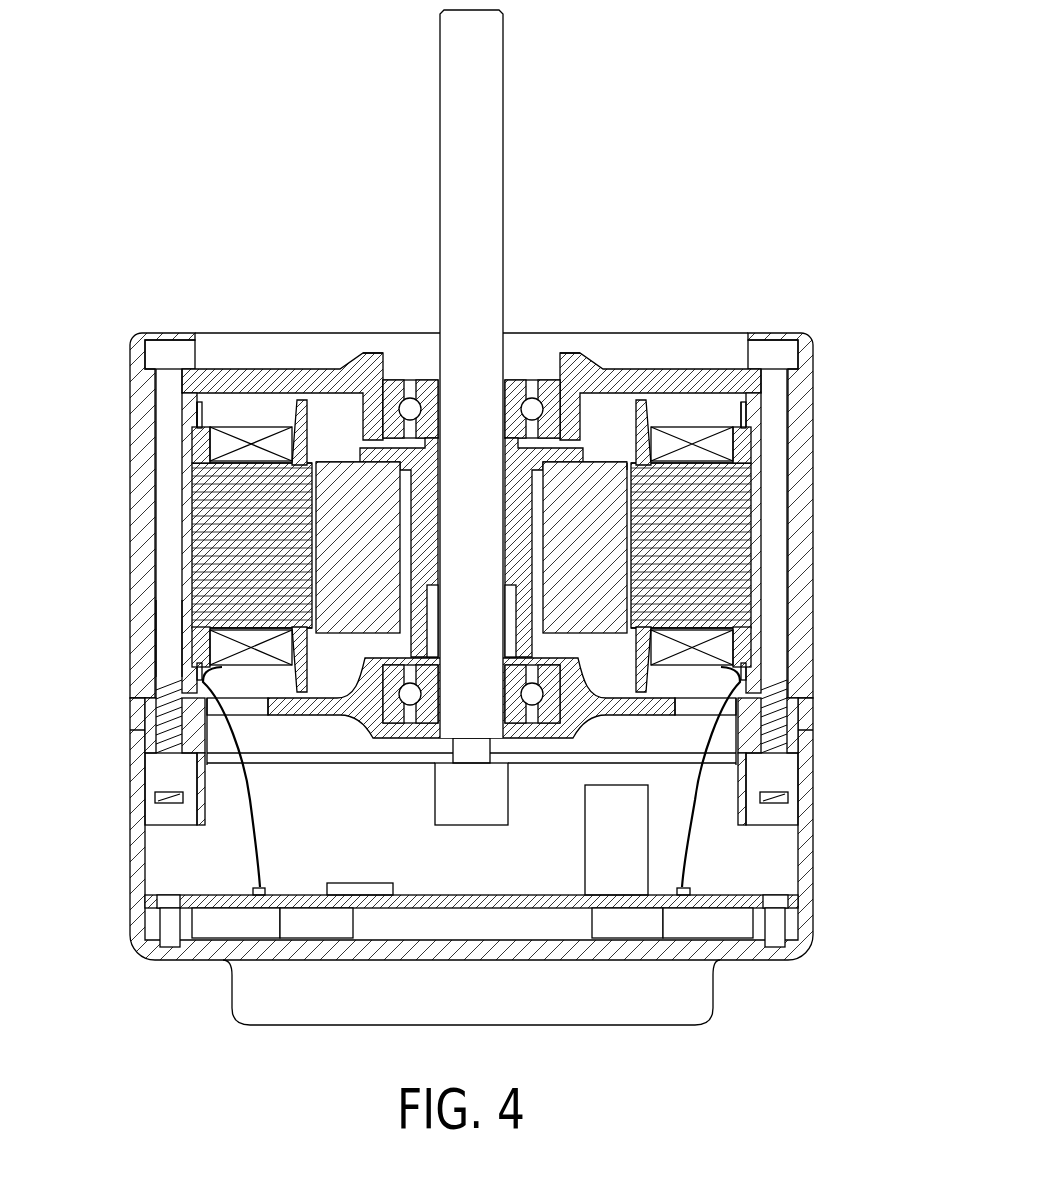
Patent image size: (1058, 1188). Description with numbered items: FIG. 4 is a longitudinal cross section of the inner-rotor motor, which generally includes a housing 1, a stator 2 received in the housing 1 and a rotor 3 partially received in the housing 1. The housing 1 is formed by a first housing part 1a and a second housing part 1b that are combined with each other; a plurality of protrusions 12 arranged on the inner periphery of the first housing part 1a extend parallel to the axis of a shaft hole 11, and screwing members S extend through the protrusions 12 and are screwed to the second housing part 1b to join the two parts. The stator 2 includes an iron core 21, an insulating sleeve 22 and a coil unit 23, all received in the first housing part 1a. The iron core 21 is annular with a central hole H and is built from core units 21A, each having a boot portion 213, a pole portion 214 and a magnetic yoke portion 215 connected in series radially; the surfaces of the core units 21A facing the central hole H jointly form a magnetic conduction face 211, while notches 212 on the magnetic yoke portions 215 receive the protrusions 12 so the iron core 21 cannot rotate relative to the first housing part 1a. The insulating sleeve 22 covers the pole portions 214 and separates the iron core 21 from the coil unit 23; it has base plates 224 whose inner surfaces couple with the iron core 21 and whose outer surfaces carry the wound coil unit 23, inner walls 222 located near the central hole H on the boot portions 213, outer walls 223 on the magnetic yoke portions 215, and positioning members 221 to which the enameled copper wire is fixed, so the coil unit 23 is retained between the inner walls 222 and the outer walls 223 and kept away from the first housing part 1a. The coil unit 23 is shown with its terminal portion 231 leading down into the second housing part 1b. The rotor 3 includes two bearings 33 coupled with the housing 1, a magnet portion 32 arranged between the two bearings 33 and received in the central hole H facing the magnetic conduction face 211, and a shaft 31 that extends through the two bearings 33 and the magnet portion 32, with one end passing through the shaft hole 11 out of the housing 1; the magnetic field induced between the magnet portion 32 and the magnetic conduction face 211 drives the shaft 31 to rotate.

The housing 1 is at (464, 684).
The first housing part 1a is at (803, 670).
The second housing part 1b is at (795, 947).
The shaft hole 11 is at (509, 350).
The protrusions 12 is at (395, 543).
The stator 2 is at (519, 550).
The iron core 21 is at (580, 443).
The core units 21A is at (580, 535).
The magnetic conduction face 211 is at (609, 575).
The notches 212 is at (200, 523).
The boot portion 213 is at (636, 462).
The pole portion 214 is at (683, 513).
The magnetic yoke portion 215 is at (743, 542).
The insulating sleeve 22 is at (481, 561).
The positioning members 221 is at (736, 399).
The inner walls 222 is at (640, 399).
The outer walls 223 is at (748, 422).
The base plates 224 is at (210, 420).
The coil unit 23 is at (444, 461).
The terminal 231 is at (217, 427).
The rotor 3 is at (473, 549).
The shaft 31 is at (487, 130).
The magnet portion 32 is at (597, 473).
The bearings 33 is at (393, 384).
The central hole H is at (629, 455).
The screwing members S is at (167, 587).